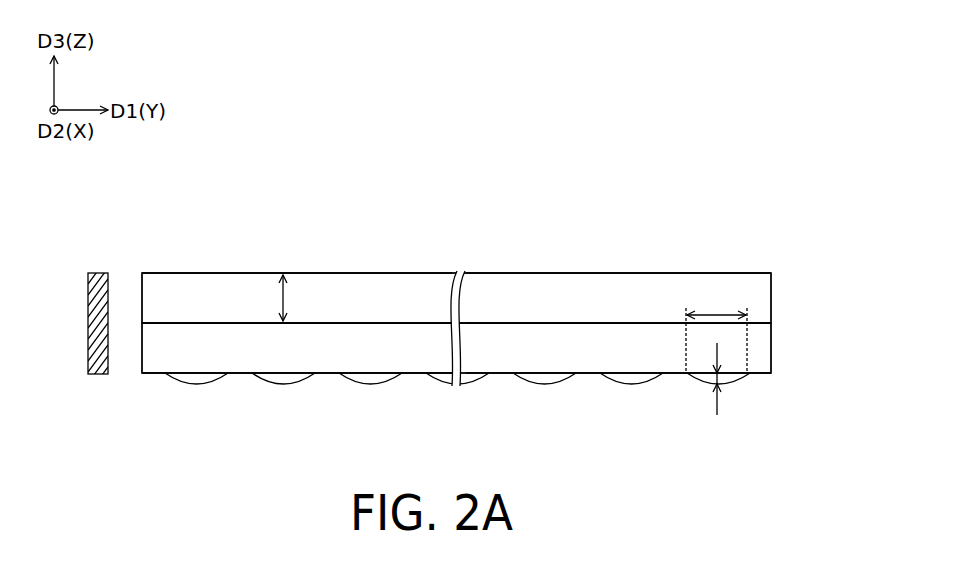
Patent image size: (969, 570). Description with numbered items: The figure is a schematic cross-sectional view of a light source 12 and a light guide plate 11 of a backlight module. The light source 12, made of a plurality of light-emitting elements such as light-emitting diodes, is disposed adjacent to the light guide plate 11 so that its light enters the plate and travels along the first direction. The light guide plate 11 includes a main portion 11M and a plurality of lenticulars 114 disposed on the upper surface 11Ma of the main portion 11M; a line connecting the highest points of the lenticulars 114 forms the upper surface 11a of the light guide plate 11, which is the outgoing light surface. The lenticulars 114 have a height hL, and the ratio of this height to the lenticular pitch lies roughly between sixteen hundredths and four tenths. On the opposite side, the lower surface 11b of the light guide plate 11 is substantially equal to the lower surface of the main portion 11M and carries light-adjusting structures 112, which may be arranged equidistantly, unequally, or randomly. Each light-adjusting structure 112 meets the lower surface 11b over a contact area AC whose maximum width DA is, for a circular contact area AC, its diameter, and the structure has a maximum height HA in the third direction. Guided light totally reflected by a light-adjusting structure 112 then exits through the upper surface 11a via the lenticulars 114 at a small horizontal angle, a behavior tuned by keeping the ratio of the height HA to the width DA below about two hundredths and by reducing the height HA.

The light guide plate 11 is at (826, 252).
The upper surface 11a is at (541, 273).
The lower surface 11b is at (152, 375).
The main portion 11M is at (758, 338).
The upper surface of the main portion 11Ma is at (383, 322).
The light-adjusting structure 112 is at (198, 383).
The lenticular 114 is at (760, 290).
The light source 12 is at (93, 310).
The height of the lenticulars hL is at (299, 298).
The maximum width of the contact area DA is at (716, 328).
The maximum height of the light-adjusting structure HA is at (730, 385).
The contact area AC is at (699, 376).